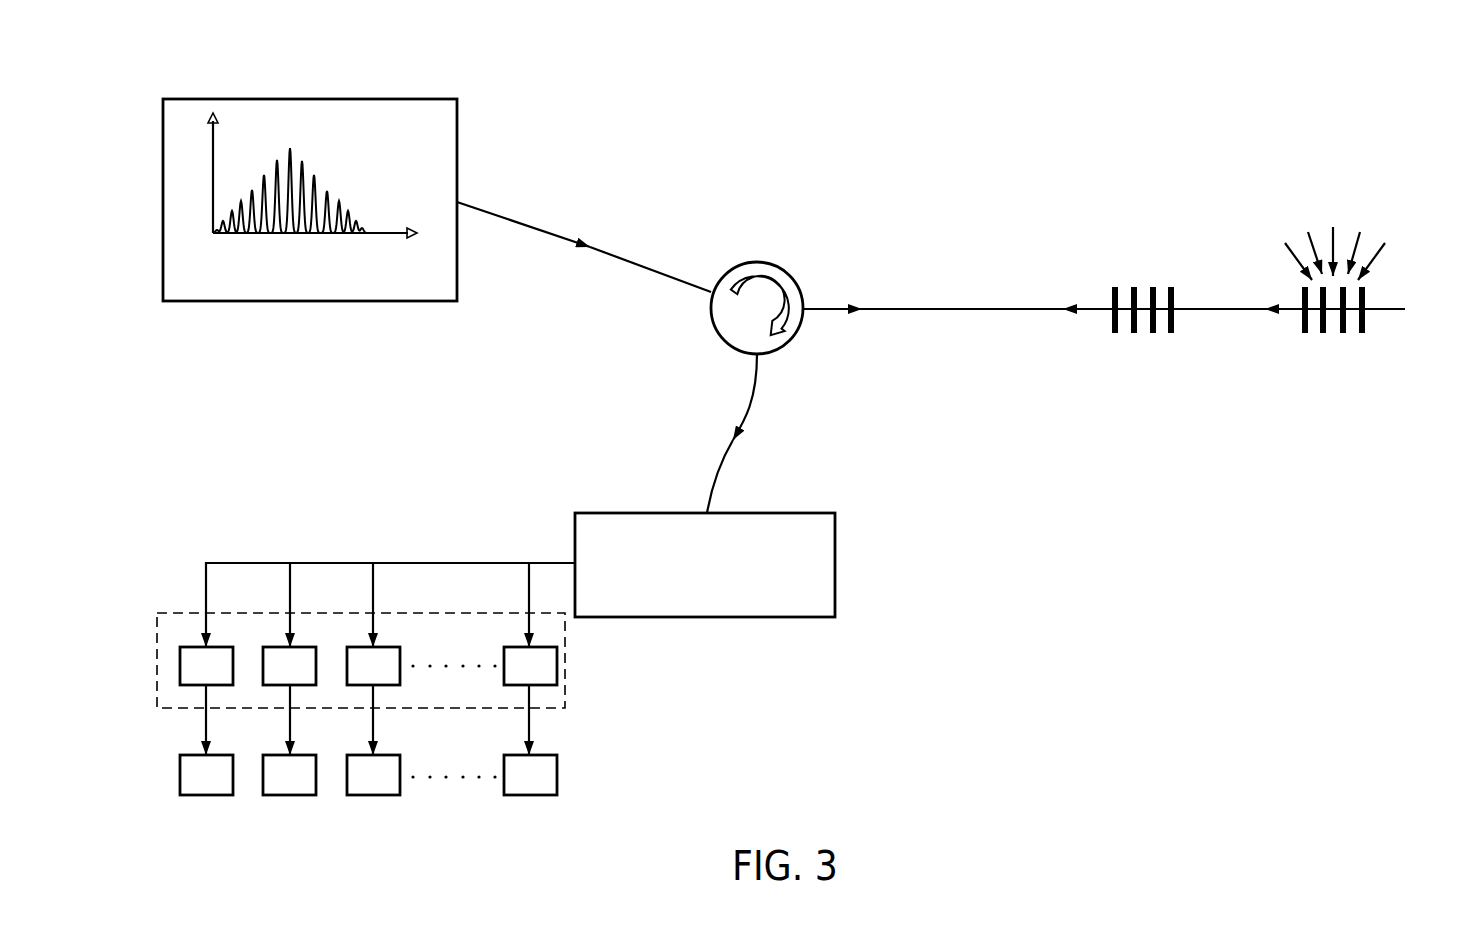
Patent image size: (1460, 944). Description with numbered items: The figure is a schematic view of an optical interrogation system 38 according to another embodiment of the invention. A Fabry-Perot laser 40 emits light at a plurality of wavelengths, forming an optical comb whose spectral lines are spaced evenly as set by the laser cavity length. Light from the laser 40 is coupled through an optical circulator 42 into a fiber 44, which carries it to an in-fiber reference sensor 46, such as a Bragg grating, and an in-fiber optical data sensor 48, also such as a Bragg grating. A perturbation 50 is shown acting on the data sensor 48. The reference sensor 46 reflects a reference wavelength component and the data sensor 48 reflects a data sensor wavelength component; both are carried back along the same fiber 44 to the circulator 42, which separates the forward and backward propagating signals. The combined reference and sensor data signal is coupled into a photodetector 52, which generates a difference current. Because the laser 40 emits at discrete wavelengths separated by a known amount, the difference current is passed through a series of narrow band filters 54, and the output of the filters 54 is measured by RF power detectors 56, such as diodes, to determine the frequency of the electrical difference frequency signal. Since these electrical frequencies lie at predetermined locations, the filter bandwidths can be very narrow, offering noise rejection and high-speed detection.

The optical interrogation system 38 is at (1346, 79).
The Fabry-Perot laser 40 is at (163, 213).
The optical circulator 42 is at (757, 262).
The fiber 44 is at (906, 309).
The in-fiber reference sensor 46 is at (1134, 269).
The in-fiber optical data sensor 48 is at (1330, 343).
The applied perturbation (strain/pressure) 50 is at (1357, 242).
The photodetector 52 is at (835, 562).
The narrow band filters 54 is at (168, 711).
The RF power detectors 56 is at (190, 818).